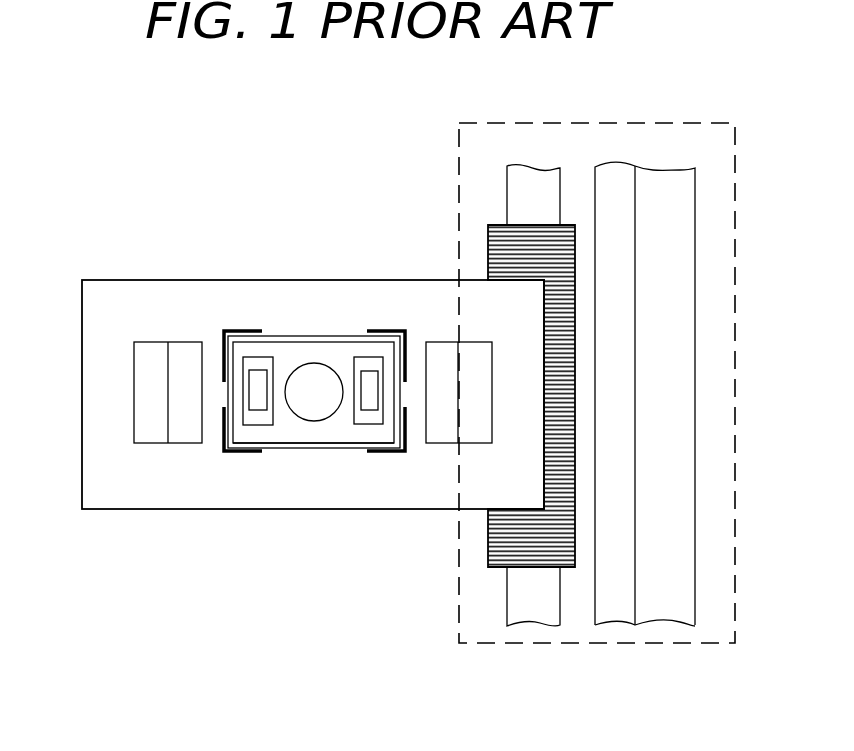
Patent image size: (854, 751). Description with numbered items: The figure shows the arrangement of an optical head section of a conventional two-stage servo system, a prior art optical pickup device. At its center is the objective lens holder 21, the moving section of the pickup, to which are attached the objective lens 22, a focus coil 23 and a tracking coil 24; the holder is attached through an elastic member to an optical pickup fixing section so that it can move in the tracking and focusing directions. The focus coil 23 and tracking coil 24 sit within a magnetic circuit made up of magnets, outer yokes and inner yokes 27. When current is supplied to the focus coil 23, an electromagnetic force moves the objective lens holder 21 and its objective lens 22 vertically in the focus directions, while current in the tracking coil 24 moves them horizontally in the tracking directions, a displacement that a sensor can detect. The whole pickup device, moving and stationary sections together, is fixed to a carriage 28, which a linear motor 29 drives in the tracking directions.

The objective lens holder 21 is at (288, 346).
The objective lens 22 is at (320, 367).
The focus coil 23 is at (313, 448).
The tracking coil 24 is at (230, 330).
The inner yokes 27 is at (260, 407).
The carriage 28 is at (178, 280).
The linear motor 29 is at (655, 122).